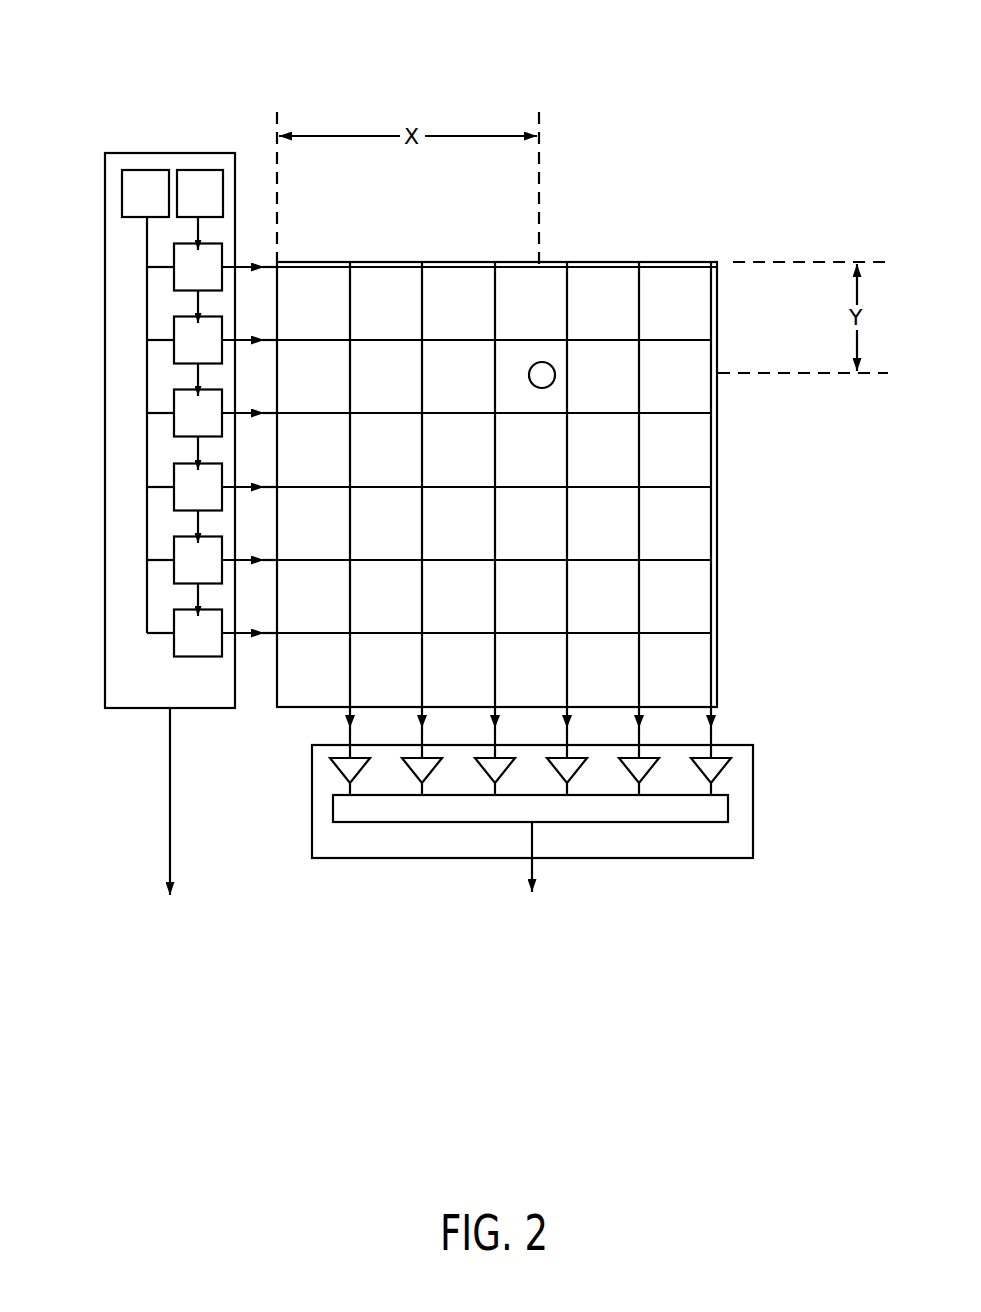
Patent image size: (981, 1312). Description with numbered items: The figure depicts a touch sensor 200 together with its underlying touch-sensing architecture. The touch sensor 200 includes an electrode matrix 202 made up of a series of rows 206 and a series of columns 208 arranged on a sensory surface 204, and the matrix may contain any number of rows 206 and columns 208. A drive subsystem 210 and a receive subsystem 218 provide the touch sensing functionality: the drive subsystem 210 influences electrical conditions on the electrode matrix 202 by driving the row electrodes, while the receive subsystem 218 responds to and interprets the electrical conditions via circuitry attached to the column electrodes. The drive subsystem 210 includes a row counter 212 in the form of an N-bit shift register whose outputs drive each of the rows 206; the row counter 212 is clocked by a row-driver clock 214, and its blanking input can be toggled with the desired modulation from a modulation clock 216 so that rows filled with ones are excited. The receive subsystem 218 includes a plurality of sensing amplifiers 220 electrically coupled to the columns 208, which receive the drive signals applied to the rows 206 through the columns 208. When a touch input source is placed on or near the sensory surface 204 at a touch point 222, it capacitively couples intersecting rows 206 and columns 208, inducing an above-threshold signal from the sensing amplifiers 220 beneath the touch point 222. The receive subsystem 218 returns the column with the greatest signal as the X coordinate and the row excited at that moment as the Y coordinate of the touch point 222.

The touch sensor 200 is at (812, 33).
The electrode matrix 202 is at (702, 185).
The sensory surface 204 is at (718, 664).
The rows 206 is at (700, 633).
The columns 208 is at (477, 277).
The drive subsystem 210 is at (105, 442).
The row counter 212 is at (112, 609).
The row-driver clock 214 is at (193, 170).
The modulation clock 216 is at (143, 170).
The receive subsystem 218 is at (648, 858).
The sensing amplifiers 220 is at (738, 769).
The touch point 222 is at (542, 375).